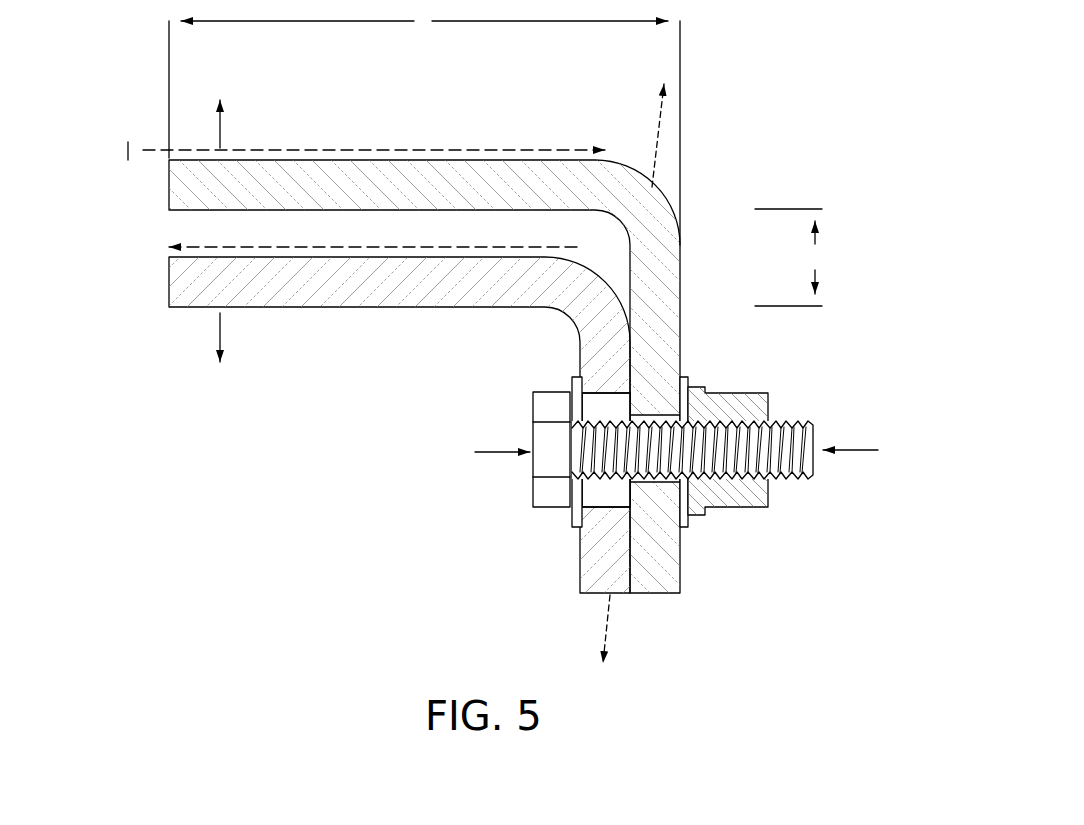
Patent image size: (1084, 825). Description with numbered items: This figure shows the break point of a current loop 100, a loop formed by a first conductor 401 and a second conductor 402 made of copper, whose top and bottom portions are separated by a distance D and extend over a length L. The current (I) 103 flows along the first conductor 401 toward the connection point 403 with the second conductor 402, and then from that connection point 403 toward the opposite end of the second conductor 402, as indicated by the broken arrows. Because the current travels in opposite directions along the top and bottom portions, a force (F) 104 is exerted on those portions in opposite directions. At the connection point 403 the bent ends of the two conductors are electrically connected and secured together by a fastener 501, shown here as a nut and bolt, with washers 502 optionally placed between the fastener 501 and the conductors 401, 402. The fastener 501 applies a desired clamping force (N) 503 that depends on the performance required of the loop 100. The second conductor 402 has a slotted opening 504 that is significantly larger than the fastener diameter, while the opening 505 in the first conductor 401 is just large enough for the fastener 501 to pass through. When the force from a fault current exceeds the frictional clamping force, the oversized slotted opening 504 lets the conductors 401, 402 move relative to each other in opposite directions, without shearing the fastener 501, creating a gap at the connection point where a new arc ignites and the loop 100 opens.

The current loop 100 is at (498, 336).
The current (I) 103 is at (128, 150).
The force (F) 104 is at (240, 90).
The first conductor 401 is at (665, 212).
The second conductor 402 is at (352, 302).
The connection point 403 is at (588, 402).
The fastener 501 is at (768, 400).
The washers 502 is at (572, 522).
The clamping force (N) 503 is at (864, 462).
The slotted opening 504 is at (630, 403).
The opening 505 is at (655, 413).